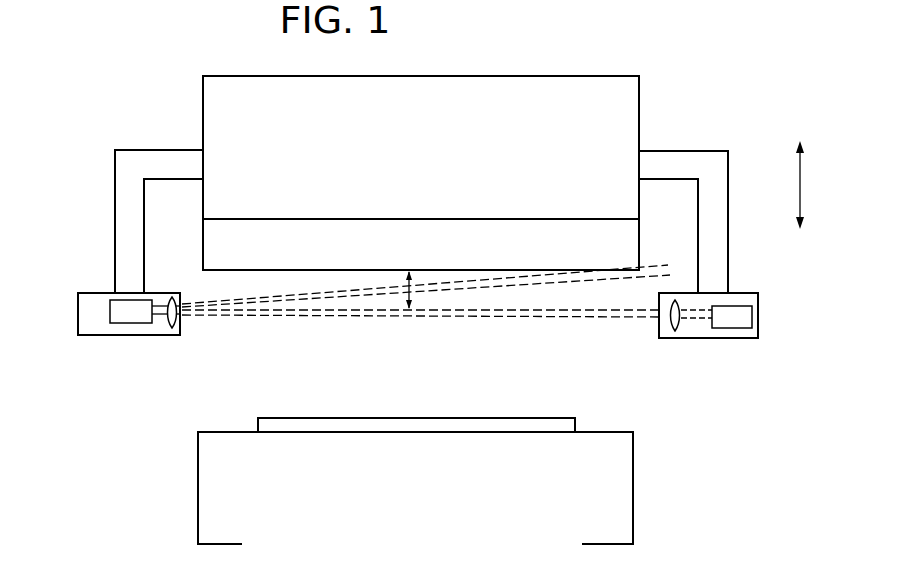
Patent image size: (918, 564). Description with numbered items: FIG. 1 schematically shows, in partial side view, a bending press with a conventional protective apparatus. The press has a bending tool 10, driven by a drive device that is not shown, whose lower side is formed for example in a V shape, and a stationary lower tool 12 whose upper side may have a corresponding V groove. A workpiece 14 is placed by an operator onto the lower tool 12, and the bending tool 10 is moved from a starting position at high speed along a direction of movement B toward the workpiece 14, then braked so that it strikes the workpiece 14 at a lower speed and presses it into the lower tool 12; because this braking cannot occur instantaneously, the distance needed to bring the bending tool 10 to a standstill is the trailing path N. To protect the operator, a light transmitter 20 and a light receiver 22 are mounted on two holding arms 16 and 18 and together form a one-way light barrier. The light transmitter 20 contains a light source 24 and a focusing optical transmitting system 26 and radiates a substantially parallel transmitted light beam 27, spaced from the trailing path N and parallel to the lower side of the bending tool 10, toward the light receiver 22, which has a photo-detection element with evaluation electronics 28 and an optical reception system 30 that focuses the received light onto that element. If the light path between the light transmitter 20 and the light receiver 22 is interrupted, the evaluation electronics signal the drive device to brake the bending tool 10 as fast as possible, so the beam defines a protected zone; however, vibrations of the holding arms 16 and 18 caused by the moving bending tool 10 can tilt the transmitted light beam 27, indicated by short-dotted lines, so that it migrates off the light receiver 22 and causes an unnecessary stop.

The bending tool 10 is at (598, 100).
The lower tool 12 is at (618, 478).
The workpiece 14 is at (508, 429).
The holding arm 16 is at (155, 157).
The holding arm 18 is at (680, 170).
The light transmitter 20 is at (75, 338).
The light receiver 22 is at (764, 333).
The light source 24 is at (131, 325).
The focusing optical transmitting system 26 is at (171, 330).
The transmitted light beam 27 is at (355, 313).
The photo-detection element with evaluation electronics 28 is at (732, 322).
The optical reception system 30 is at (675, 332).
The trailing path N is at (412, 290).
The direction of movement B is at (803, 185).